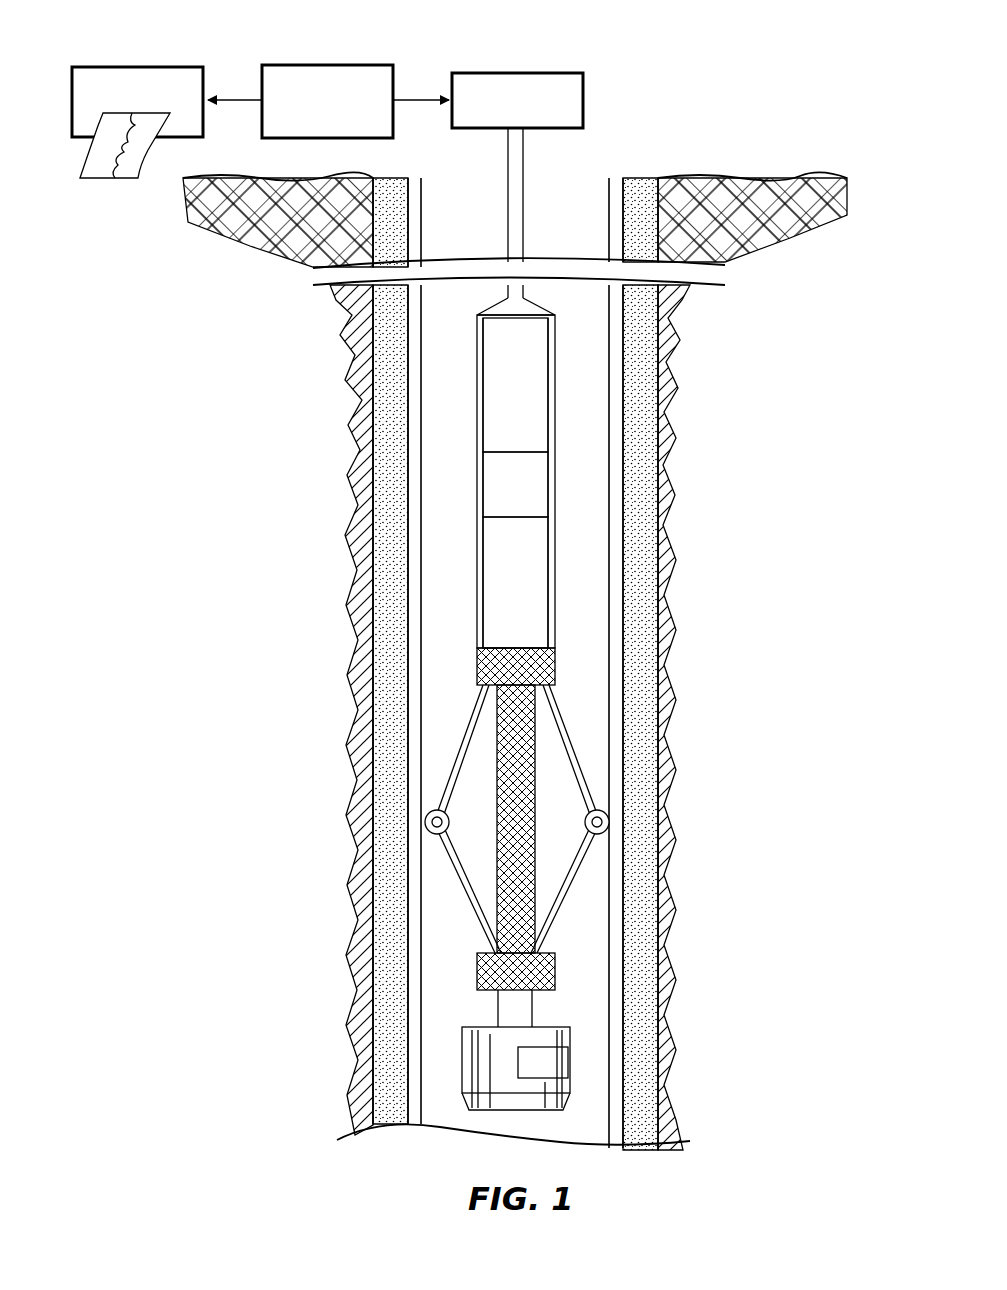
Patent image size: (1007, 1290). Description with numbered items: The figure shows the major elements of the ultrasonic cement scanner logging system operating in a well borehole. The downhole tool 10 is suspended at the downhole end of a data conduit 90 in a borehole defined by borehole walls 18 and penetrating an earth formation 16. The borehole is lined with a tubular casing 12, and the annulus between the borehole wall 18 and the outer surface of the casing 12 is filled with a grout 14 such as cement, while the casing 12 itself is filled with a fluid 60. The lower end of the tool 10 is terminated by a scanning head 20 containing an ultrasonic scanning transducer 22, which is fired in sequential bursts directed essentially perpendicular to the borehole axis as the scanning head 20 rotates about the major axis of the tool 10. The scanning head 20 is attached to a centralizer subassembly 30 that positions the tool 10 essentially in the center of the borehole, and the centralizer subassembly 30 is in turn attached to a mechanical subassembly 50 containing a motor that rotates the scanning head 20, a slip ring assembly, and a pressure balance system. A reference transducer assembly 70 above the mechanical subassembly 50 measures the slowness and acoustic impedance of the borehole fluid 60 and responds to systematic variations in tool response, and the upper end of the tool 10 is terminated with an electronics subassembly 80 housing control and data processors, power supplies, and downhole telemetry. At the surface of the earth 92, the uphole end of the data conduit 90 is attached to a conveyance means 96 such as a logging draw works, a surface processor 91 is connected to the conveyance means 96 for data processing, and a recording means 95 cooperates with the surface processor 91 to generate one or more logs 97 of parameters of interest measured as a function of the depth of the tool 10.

The tool 10 is at (615, 37).
The casing 12 is at (407, 382).
The grout 14 is at (390, 405).
The earth formation 16 is at (310, 221).
The borehole wall 18 is at (356, 435).
The scanning head 20 is at (490, 1035).
The ultrasonic scanning transducer 22 is at (546, 1035).
The centralizer subassembly 30 is at (535, 752).
The mechanical subassembly 50 is at (477, 583).
The fluid 60 is at (493, 474).
The reference transducer assembly 70 is at (477, 485).
The electronics subassembly 80 is at (477, 383).
The data conduit 90 is at (525, 176).
The surface processor 91 is at (287, 64).
The surface of the earth 92 is at (666, 178).
The recording means 95 is at (97, 66).
The conveyance means 96 is at (585, 102).
The log 97 is at (92, 180).